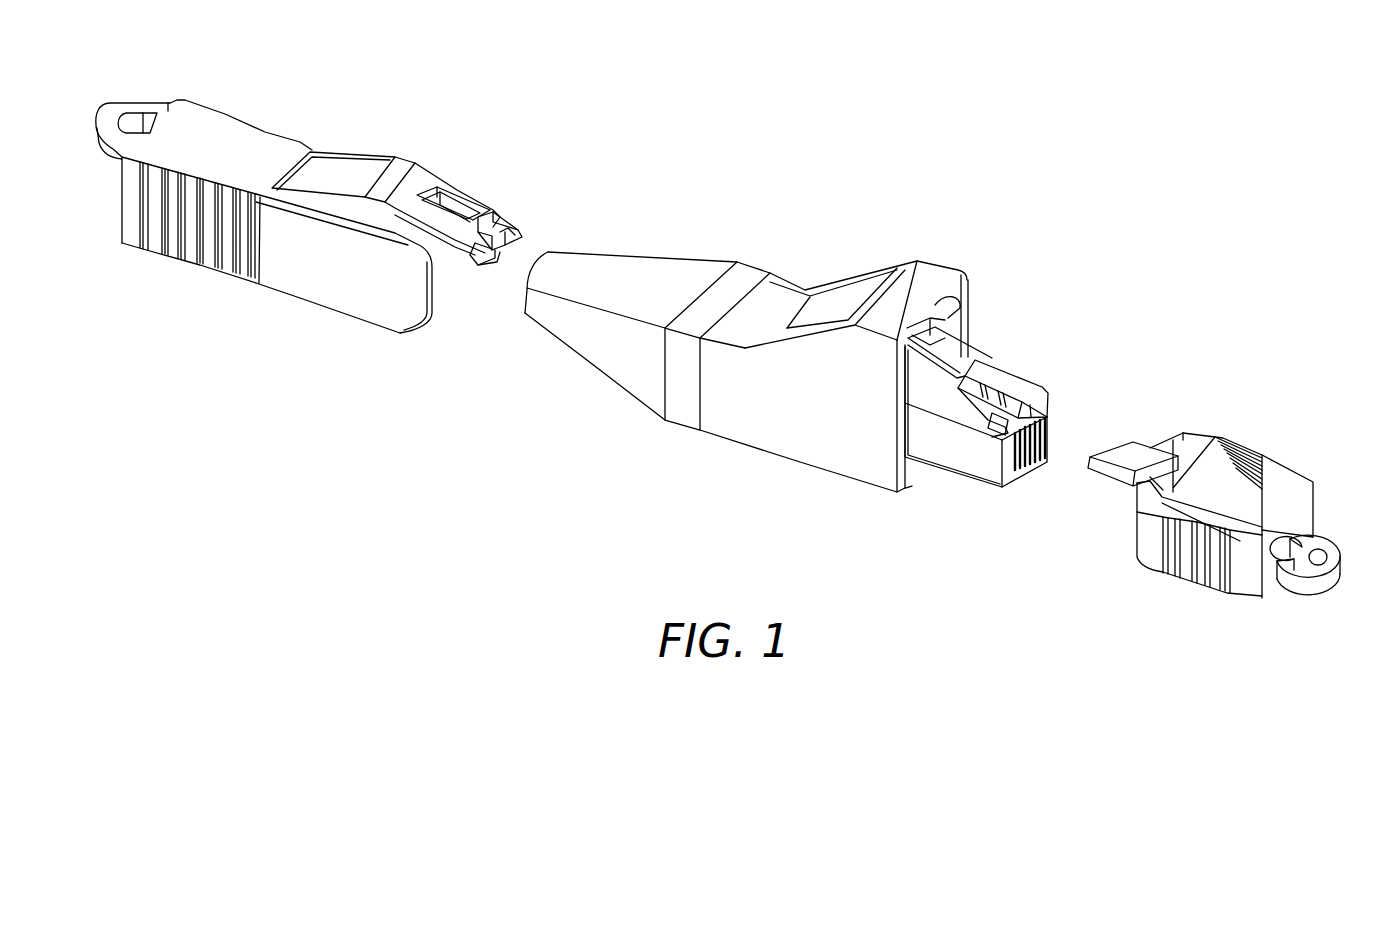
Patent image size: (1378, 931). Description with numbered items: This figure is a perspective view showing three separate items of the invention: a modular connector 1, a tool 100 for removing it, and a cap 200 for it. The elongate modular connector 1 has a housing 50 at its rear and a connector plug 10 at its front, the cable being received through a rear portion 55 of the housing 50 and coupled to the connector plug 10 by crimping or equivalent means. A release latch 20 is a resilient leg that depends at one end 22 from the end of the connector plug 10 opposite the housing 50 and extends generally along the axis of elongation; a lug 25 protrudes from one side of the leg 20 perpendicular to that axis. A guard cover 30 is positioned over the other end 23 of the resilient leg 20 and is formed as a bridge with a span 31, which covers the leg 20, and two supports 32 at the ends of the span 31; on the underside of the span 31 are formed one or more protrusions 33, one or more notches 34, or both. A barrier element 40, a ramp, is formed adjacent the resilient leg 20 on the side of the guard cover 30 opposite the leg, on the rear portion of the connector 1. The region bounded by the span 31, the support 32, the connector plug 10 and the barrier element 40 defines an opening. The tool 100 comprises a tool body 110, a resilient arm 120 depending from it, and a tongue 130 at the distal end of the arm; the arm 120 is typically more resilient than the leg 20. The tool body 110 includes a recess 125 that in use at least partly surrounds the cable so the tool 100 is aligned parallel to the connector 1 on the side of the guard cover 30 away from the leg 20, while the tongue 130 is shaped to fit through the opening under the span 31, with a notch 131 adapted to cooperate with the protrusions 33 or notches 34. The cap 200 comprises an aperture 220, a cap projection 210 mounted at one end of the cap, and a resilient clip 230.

The modular connector 1 is at (975, 122).
The connector plug 10 is at (1055, 435).
The release latch 20 is at (1120, 373).
The end of the resilient leg 22 is at (1025, 392).
The end of the resilient leg 23 is at (966, 368).
The lug 25 is at (995, 362).
The guard cover 30 is at (922, 242).
The span 31 is at (935, 277).
The supports 32 is at (966, 299).
The protrusions 33 is at (916, 330).
The notches 34 is at (937, 335).
The barrier element 40 is at (836, 318).
The housing 50 is at (707, 450).
The rear portion of the housing 55 is at (676, 242).
The tool 100 is at (400, 120).
The tool body 110 is at (251, 141).
The resilient arm 120 is at (430, 178).
The recess 125 is at (448, 297).
The tongue 130 is at (503, 230).
The notch 131 is at (500, 258).
The cap 200 is at (1273, 445).
The cap projection 210 is at (1124, 468).
The aperture 220 is at (1120, 530).
The resilient clip 230 is at (1285, 478).